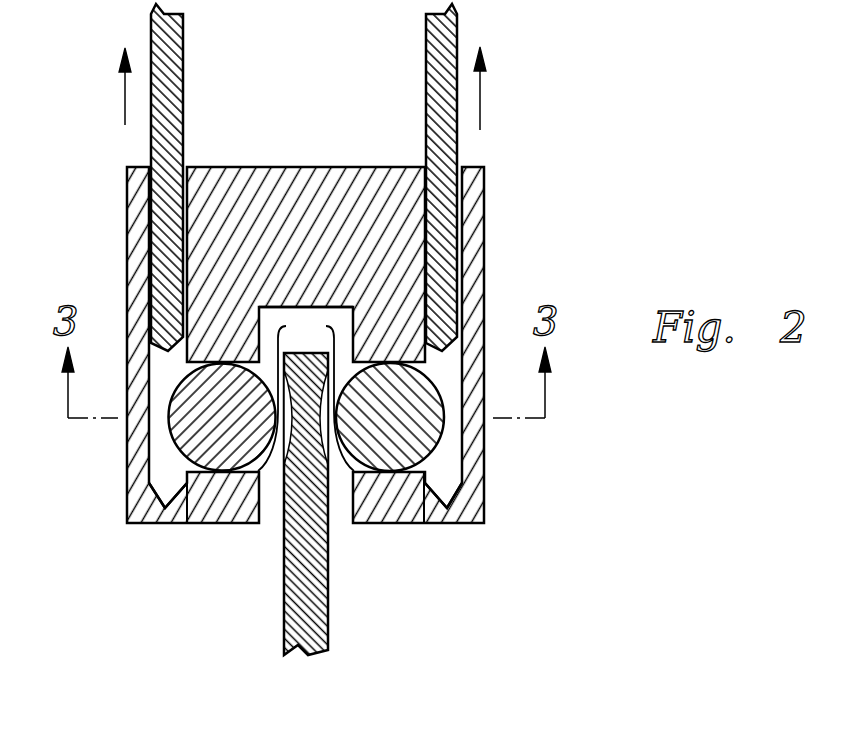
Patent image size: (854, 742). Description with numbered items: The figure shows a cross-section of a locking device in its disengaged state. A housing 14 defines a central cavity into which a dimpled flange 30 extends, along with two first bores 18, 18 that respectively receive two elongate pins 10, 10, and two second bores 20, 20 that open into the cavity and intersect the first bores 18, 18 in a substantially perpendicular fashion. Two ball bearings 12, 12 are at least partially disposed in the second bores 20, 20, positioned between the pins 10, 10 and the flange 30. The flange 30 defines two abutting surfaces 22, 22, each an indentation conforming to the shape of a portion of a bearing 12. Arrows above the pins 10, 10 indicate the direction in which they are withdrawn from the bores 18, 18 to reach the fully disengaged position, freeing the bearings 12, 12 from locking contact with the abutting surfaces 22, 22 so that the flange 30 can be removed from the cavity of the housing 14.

The pin 10 is at (166, 33).
The ball bearing 12 is at (184, 433).
The housing 14 is at (303, 205).
The bore 18 is at (165, 480).
The bore 20 is at (258, 471).
The abutting surface 22 is at (306, 327).
The dimpled flange 30 is at (329, 627).